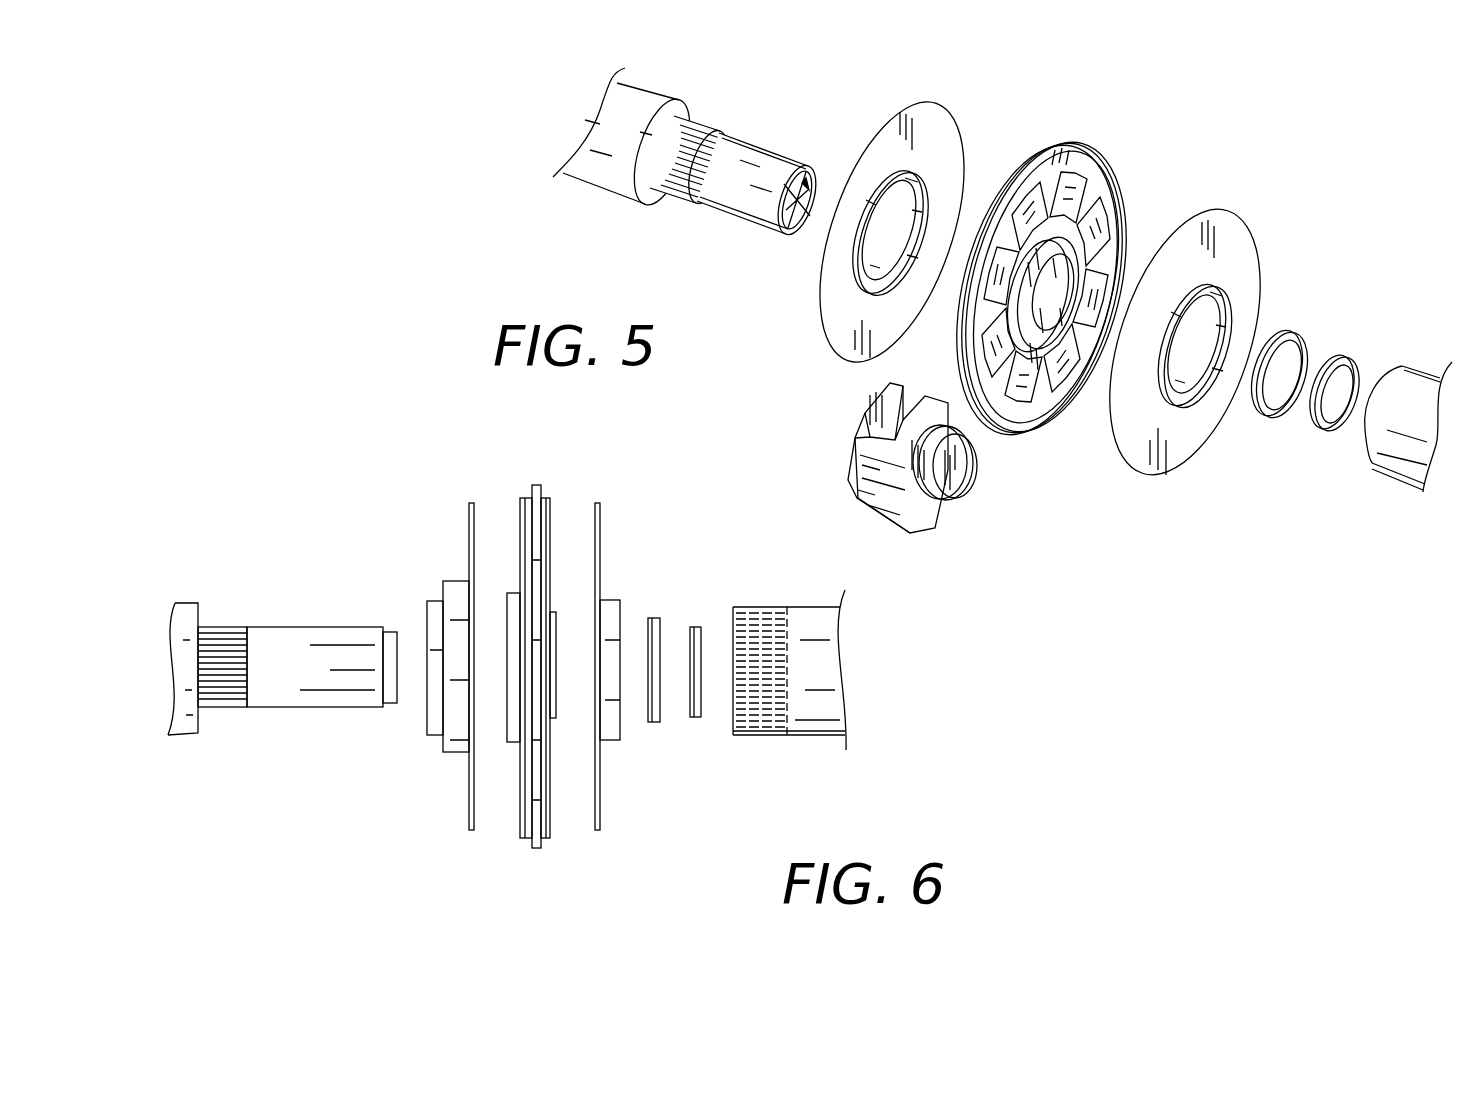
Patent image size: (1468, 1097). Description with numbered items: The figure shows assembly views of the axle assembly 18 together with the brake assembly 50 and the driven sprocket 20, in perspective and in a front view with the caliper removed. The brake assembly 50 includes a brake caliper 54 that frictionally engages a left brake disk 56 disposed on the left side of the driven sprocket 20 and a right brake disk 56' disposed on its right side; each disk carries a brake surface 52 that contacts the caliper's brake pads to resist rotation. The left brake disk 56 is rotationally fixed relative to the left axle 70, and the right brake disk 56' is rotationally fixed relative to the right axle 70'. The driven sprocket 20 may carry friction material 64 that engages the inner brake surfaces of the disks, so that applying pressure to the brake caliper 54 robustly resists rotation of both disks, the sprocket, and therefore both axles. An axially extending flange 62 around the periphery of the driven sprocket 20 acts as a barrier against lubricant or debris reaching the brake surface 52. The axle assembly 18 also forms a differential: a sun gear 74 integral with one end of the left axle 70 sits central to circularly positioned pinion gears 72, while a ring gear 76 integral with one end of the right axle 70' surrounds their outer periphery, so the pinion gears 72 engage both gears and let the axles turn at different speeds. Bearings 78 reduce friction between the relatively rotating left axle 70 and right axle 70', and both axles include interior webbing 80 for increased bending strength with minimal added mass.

In FIG. 5, the axle assembly 18 is at (715, 100).
In FIG. 5, the driven sprocket 20 is at (1095, 141).
In FIG. 6, the driven sprocket 20 is at (536, 483).
In FIG. 5, the brake assembly 50 is at (860, 405).
In FIG. 5, the brake surface 52 is at (1224, 275).
In FIG. 5, the brake caliper 54 is at (962, 482).
In FIG. 5, the left brake disk 56 is at (902, 232).
In FIG. 6, the left brake disk 56 is at (438, 666).
In FIG. 5, the right brake disk 56' is at (1204, 341).
In FIG. 6, the right brake disk 56' is at (639, 666).
In FIG. 6, the axially extending flange 62 is at (519, 820).
In FIG. 5, the friction material 64 is at (1112, 248).
In FIG. 5, the left axle 70 is at (627, 151).
In FIG. 6, the left axle 70 is at (218, 645).
In FIG. 5, the right axle 70' is at (1396, 442).
In FIG. 6, the right axle 70' is at (789, 650).
In FIG. 5, the pinion gears 72 is at (1022, 345).
In FIG. 5, the sun gear 74 is at (665, 197).
In FIG. 6, the sun gear 74 is at (236, 626).
In FIG. 6, the ring gear 76 is at (750, 718).
In FIG. 5, the bearings 78 is at (1332, 360).
In FIG. 6, the bearings 78 is at (690, 625).
In FIG. 5, the interior webbing 80 is at (808, 180).